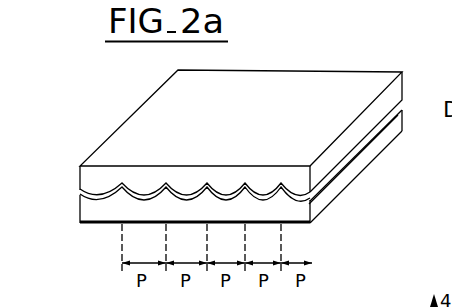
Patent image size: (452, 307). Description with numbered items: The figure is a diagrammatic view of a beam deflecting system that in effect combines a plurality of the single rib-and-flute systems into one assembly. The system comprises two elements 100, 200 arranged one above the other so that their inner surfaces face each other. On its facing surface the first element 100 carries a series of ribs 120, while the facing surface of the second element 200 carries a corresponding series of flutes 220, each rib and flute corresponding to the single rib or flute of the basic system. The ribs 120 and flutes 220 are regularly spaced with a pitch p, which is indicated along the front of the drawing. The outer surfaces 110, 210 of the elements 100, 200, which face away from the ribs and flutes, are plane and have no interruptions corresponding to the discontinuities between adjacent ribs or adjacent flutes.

The element 100 is at (369, 85).
The surface 110 is at (172, 110).
The ribs 120 is at (97, 186).
The element 200 is at (357, 152).
The surface 210 is at (329, 206).
The flutes 220 is at (96, 209).